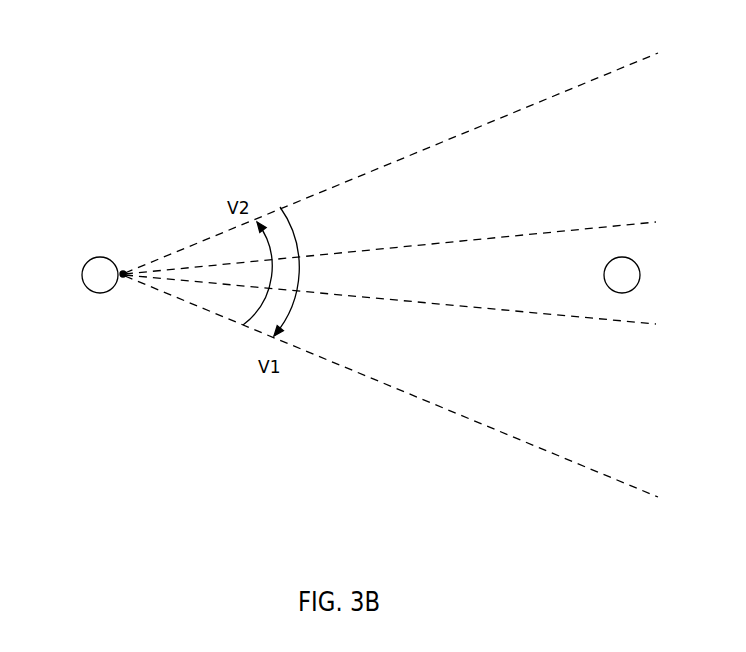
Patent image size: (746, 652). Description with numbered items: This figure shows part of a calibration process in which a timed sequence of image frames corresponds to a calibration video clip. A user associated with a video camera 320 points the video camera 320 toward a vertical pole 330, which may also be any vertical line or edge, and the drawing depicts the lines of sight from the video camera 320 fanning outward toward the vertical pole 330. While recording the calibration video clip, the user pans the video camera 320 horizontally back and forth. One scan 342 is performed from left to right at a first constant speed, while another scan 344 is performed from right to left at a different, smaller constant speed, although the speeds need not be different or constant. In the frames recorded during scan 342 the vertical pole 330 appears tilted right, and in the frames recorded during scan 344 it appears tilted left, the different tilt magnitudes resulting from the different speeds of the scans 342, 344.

The video camera 320 is at (89, 262).
The vertical pole 330 is at (639, 268).
The scan 342 is at (291, 228).
The scan 344 is at (232, 228).